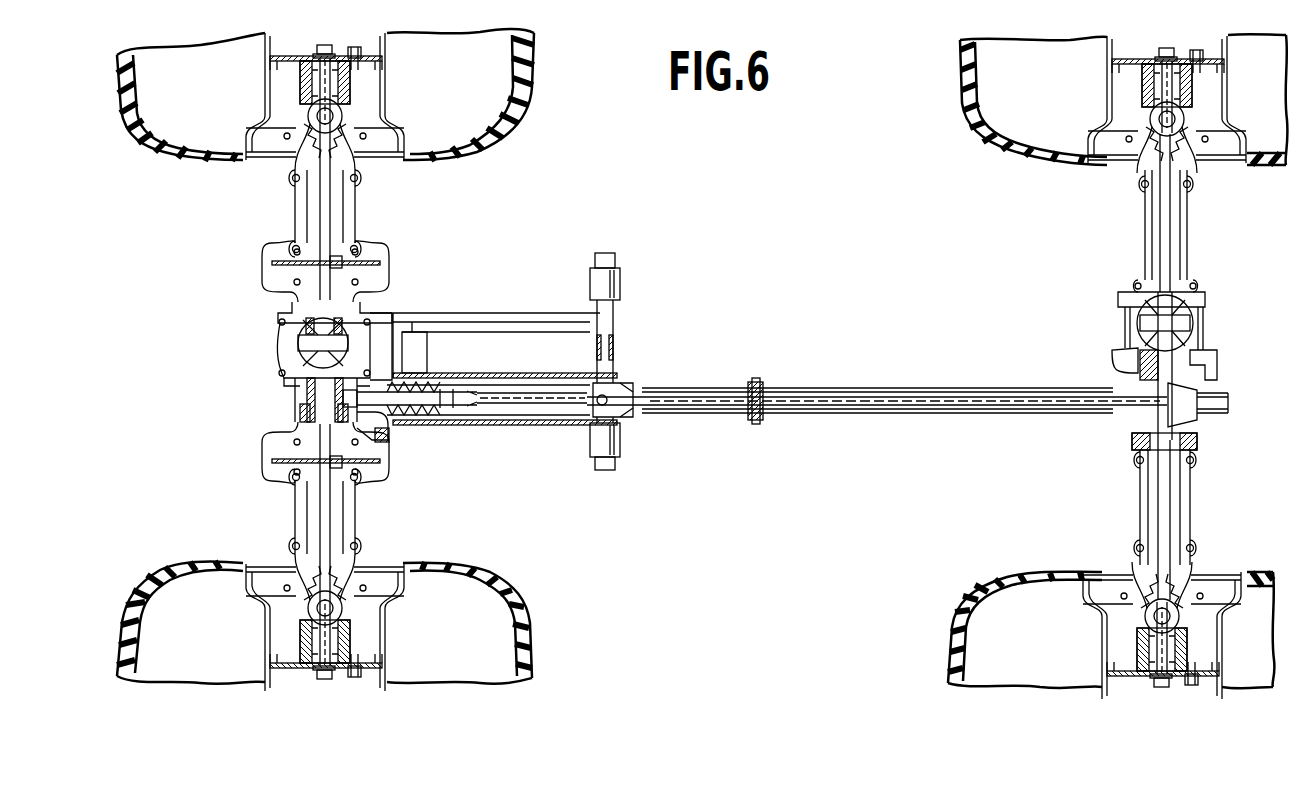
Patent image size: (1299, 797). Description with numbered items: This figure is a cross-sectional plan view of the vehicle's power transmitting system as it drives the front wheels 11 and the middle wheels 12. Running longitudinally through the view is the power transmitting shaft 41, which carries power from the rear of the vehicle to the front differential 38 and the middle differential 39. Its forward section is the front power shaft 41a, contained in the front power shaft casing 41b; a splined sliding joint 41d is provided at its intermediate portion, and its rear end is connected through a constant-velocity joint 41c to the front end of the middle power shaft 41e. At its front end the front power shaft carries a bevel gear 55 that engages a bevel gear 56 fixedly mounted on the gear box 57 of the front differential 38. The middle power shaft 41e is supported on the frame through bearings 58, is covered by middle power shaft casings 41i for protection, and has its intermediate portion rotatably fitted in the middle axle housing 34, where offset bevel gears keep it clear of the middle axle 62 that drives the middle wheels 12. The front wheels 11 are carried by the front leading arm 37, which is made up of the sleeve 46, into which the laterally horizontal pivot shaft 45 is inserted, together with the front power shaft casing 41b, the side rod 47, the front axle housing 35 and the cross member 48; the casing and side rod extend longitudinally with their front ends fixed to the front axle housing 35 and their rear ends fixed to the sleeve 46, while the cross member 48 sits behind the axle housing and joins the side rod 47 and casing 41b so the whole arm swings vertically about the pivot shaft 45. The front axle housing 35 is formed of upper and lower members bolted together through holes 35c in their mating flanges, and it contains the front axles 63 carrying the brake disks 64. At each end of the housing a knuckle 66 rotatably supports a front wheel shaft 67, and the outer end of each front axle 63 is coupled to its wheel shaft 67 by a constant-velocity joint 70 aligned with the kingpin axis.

The front wheels 11 is at (528, 66).
The middle wheels 12 is at (975, 76).
The middle axle housing 34 is at (1130, 494).
The front axle housing 35 is at (395, 246).
The holes 35c is at (290, 184).
The front leading arm 37 is at (494, 238).
The front differential 38 is at (276, 365).
The middle differential 39 is at (1117, 318).
The power transmitting shaft 41 is at (826, 338).
The front power shaft 41a is at (545, 405).
The front power shaft casing 41b is at (502, 420).
The constant-velocity joint 41c is at (625, 412).
The splined sliding joint 41d is at (440, 408).
The middle power shaft 41e is at (850, 410).
The middle power shaft casings 41i is at (1000, 388).
The pivot shaft 45 is at (605, 346).
The sleeve 46 is at (613, 336).
The side rod 47 is at (514, 318).
The cross member 48 is at (420, 332).
The bevel gear 55 is at (355, 422).
The bevel gear 56 is at (304, 413).
The gear box 57 is at (300, 343).
The bearings 58 is at (756, 422).
The middle axle 62 is at (1160, 222).
The front axles 63 is at (322, 214).
The brake disks 64 is at (272, 257).
The knuckles 66 is at (352, 86).
The shafts of the front wheels 67 is at (322, 66).
The constant-velocity joint 70 is at (352, 140).